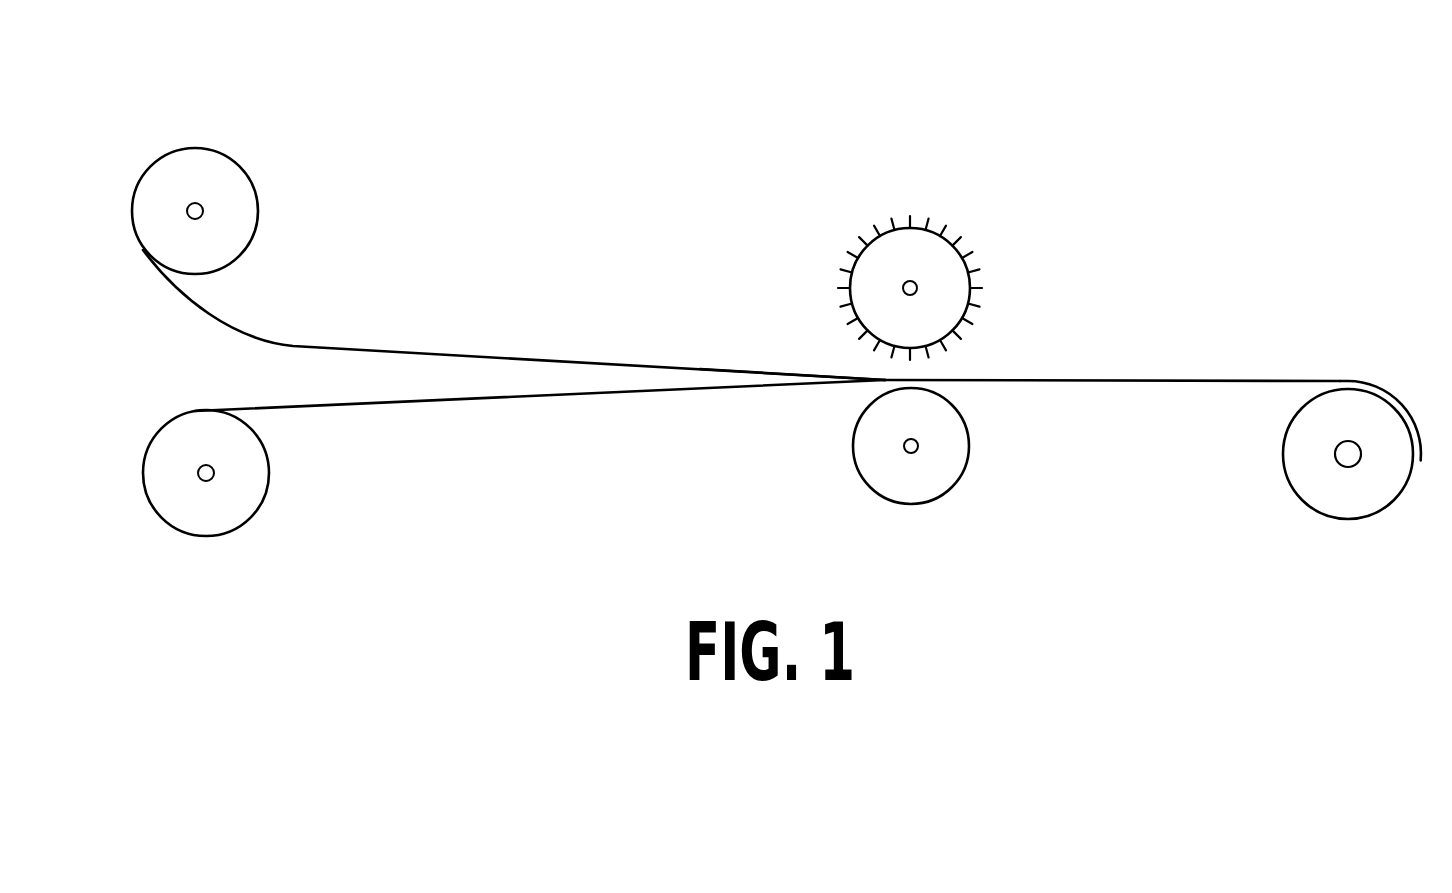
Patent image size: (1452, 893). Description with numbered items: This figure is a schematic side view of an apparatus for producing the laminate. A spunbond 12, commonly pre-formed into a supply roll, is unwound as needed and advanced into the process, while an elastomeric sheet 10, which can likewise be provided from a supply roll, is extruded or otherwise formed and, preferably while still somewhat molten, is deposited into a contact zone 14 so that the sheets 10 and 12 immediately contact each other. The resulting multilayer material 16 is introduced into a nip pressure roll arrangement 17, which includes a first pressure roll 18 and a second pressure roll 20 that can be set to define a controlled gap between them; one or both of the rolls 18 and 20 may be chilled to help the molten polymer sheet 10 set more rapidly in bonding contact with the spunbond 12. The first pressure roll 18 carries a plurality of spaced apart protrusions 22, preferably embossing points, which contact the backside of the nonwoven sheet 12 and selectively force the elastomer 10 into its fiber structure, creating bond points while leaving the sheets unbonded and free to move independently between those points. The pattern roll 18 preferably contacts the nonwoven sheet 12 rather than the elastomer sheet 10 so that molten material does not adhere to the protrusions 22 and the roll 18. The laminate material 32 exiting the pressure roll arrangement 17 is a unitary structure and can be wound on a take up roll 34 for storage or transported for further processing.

The elastomeric sheet 10 is at (333, 407).
The spunbond 12 is at (294, 345).
The contact zone 14 is at (583, 418).
The multilayer material 16 is at (702, 368).
The nip pressure roll arrangement 17 is at (880, 142).
The first pressure roll 18 is at (968, 252).
The second pressure roll 20 is at (943, 495).
The protrusions 22 is at (972, 297).
The laminate material 32 is at (1122, 381).
The take up roll 34 is at (1368, 517).